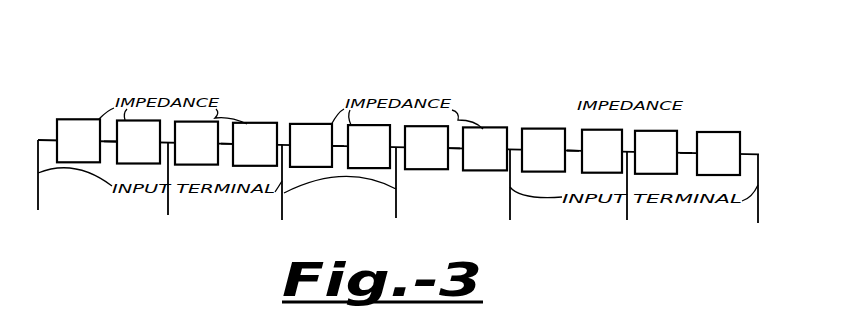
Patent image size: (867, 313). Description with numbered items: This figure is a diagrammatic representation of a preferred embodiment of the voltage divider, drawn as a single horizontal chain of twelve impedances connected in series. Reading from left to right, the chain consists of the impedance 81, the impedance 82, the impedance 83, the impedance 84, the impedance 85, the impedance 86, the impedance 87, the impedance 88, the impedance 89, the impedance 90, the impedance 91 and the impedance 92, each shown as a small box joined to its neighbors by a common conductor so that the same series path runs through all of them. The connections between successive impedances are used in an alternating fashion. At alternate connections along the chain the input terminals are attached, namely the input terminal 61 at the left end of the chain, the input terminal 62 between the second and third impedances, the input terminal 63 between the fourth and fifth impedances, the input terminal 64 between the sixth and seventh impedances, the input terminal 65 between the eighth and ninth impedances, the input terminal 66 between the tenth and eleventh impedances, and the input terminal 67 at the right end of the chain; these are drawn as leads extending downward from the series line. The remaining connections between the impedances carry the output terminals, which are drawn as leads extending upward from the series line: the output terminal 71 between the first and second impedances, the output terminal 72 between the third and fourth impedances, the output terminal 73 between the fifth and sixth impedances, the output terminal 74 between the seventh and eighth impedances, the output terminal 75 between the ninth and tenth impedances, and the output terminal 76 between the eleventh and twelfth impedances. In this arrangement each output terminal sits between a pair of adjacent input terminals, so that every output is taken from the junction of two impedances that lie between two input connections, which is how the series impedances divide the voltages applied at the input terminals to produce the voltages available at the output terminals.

The input terminal 61 is at (41, 196).
The input terminal 62 is at (165, 199).
The input terminal 63 is at (280, 200).
The input terminal 64 is at (393, 203).
The input terminal 65 is at (508, 205).
The input terminal 66 is at (622, 207).
The input terminal 67 is at (755, 208).
The output terminal 71 is at (110, 141).
The output terminal 72 is at (227, 144).
The output terminal 73 is at (338, 146).
The output terminal 74 is at (454, 148).
The output terminal 75 is at (573, 151).
The output terminal 76 is at (686, 153).
The impedance 81 is at (78, 140).
The impedance 82 is at (138, 142).
The impedance 83 is at (196, 143).
The impedance 84 is at (255, 144).
The impedance 85 is at (311, 145).
The impedance 86 is at (369, 146).
The impedance 87 is at (426, 147).
The impedance 88 is at (485, 148).
The impedance 89 is at (543, 150).
The impedance 90 is at (602, 151).
The impedance 91 is at (656, 152).
The impedance 92 is at (718, 153).